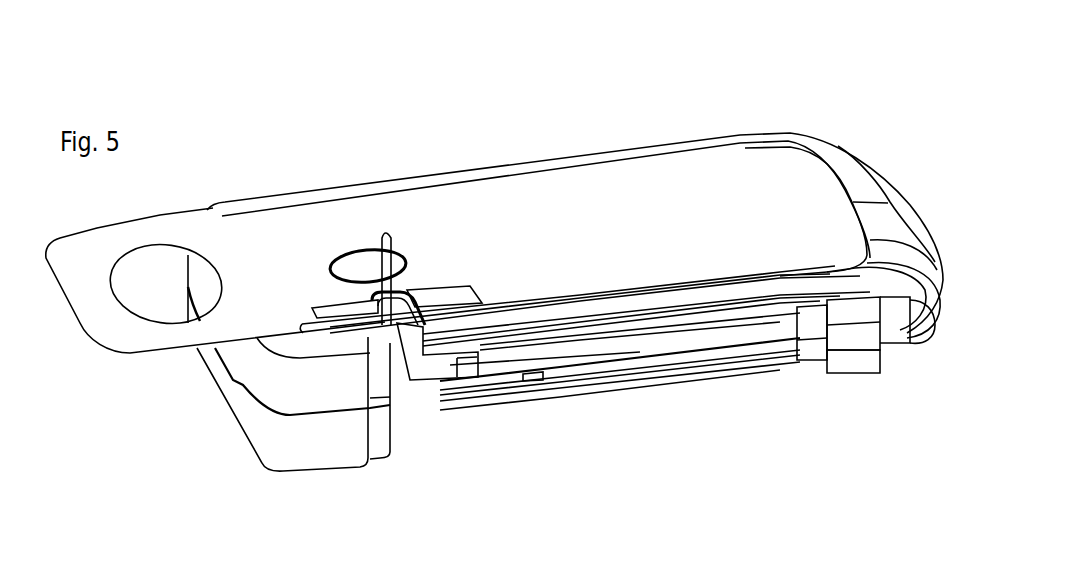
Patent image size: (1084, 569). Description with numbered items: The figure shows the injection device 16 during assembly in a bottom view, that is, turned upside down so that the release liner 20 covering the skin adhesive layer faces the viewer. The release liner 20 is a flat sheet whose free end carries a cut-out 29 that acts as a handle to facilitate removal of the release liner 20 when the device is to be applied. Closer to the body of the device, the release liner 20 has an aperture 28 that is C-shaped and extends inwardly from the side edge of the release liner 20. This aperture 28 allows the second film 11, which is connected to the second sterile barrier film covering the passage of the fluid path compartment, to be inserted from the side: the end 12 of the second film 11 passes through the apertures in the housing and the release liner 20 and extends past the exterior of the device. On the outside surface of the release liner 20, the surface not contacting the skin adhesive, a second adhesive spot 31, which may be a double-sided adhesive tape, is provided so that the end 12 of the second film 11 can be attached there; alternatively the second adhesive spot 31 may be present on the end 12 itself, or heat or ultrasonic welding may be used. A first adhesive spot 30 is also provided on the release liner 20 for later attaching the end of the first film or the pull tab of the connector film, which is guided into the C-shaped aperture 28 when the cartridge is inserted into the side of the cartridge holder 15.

The second film 11 is at (383, 284).
The end of the second film 12 is at (386, 282).
The cartridge holder 15 is at (573, 353).
The injection device 16 is at (861, 108).
The release liner 20 is at (677, 173).
The aperture 28 is at (402, 290).
The cut-out 29 is at (145, 295).
The first adhesive spot 30 is at (430, 297).
The second adhesive spot 31 is at (330, 318).